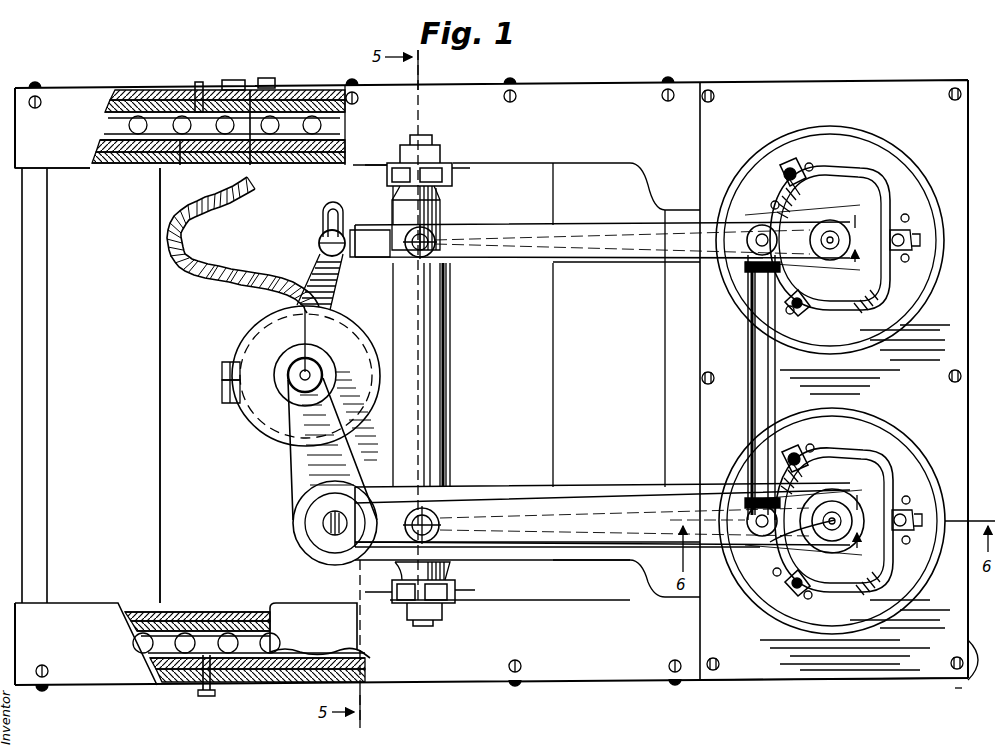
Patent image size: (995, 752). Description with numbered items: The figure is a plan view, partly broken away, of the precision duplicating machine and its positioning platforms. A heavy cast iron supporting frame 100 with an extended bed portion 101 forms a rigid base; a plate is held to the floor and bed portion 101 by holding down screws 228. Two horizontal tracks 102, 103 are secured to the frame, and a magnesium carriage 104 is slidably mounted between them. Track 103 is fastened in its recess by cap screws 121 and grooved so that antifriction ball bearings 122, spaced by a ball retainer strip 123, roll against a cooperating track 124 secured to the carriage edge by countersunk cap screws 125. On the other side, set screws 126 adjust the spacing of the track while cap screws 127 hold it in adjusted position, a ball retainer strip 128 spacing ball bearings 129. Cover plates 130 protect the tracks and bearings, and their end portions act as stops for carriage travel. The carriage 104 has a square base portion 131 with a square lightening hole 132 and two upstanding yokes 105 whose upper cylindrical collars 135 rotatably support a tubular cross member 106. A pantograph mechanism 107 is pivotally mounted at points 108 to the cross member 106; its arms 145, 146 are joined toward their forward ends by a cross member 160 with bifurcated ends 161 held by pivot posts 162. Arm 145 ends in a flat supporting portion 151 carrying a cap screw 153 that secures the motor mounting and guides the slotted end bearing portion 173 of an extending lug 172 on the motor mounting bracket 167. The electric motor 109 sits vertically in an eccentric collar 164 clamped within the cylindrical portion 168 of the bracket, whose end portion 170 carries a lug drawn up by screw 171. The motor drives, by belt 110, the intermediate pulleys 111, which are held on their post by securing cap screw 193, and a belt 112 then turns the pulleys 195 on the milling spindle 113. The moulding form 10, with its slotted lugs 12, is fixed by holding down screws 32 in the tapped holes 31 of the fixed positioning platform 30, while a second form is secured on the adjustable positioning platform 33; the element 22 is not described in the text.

The moulding form 10 is at (838, 170).
The slotted lugs 12 is at (785, 172).
The base 22 is at (971, 695).
The fixed positioning platform 30 is at (895, 165).
The tapped holes 31 is at (810, 165).
The holding down screws 32 is at (776, 180).
The adjustable positioning platform 33 is at (882, 440).
The supporting frame 100 is at (275, 684).
The bed portion 101 is at (838, 680).
The track 102 is at (150, 665).
The track 103 is at (152, 92).
The carriage 104 is at (158, 272).
The upstanding yokes 105 is at (454, 172).
The tubular cross member 106 is at (455, 384).
The pantograph mechanism 107 is at (520, 547).
The pivotal mountings 108 is at (445, 262).
The electric motor 109 is at (250, 322).
The belt 110 is at (292, 478).
The intermediate pulleys 111 is at (316, 548).
The belt 112 is at (582, 562).
The spindle 113 is at (900, 462).
The cap screws 121 is at (200, 88).
The antifriction ball bearings 122 is at (148, 100).
The ball retainer strip 123 is at (288, 110).
The track 124 is at (125, 165).
The countersunk cap screws 125 is at (182, 165).
The set screws 126 is at (212, 672).
The cap screws 127 is at (198, 694).
The ball retainer strip 128 is at (262, 612).
The ball bearings 129 is at (283, 645).
The cover plates 130 is at (85, 88).
The base portion 131 is at (555, 347).
The lightening hole 132 is at (264, 262).
The cylindrical collars 135 is at (445, 186).
The arm 145 is at (612, 268).
The arm 146 is at (640, 490).
The flat supporting portion 151 is at (350, 222).
The cap screw 153 is at (320, 232).
The cross member 160 is at (750, 366).
The bifurcated ends 161 is at (752, 280).
The pivot posts 162 is at (748, 243).
The eccentric collar 164 is at (270, 436).
The motor mounting bracket 167 is at (238, 422).
The cylindrical portion 168 is at (342, 440).
The end portion 170 is at (222, 378).
The screw 171 is at (230, 360).
The extending lug 172 is at (302, 252).
The slotted end bearing portion 173 is at (330, 202).
The securing cap screw 193 is at (322, 527).
The pulleys 195 is at (848, 560).
The holding down screws 228 is at (948, 678).